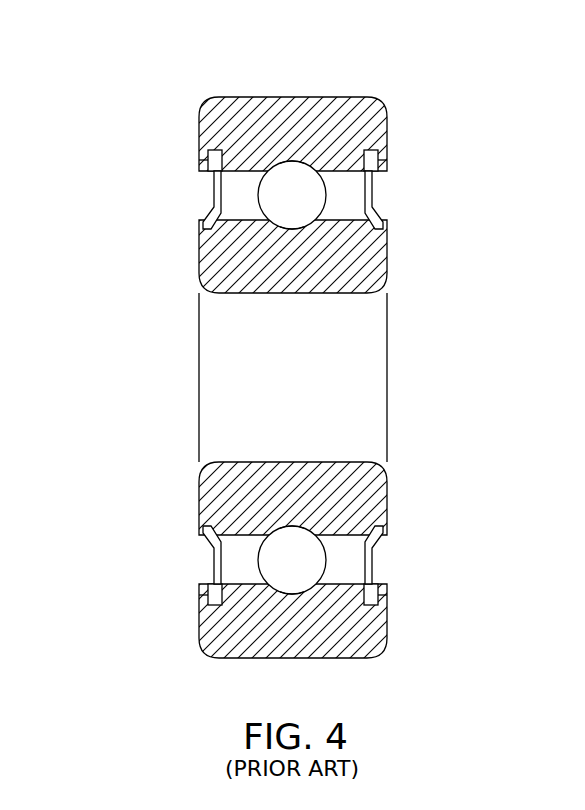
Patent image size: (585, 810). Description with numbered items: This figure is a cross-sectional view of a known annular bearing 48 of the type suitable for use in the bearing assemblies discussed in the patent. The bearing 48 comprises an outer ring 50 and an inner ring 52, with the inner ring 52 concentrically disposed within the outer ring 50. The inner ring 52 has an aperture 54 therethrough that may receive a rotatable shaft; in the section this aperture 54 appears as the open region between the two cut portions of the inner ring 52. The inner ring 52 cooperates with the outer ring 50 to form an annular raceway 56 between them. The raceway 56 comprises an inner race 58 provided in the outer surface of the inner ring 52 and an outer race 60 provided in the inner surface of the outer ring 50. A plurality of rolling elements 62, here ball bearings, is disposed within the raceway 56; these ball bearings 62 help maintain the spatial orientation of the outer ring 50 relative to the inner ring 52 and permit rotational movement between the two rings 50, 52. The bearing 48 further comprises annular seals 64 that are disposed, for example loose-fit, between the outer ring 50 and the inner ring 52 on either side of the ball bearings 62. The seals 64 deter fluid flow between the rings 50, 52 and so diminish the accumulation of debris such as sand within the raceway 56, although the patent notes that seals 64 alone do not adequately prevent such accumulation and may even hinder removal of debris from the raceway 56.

The annular bearing 48 is at (343, 372).
The outer ring 50 is at (378, 130).
The inner ring 52 is at (380, 252).
The aperture 54 is at (307, 393).
The annular raceway 56 is at (235, 200).
The inner race 58 is at (292, 229).
The outer race 60 is at (292, 162).
The rolling elements 62 is at (308, 206).
The annular seals 64 is at (218, 181).